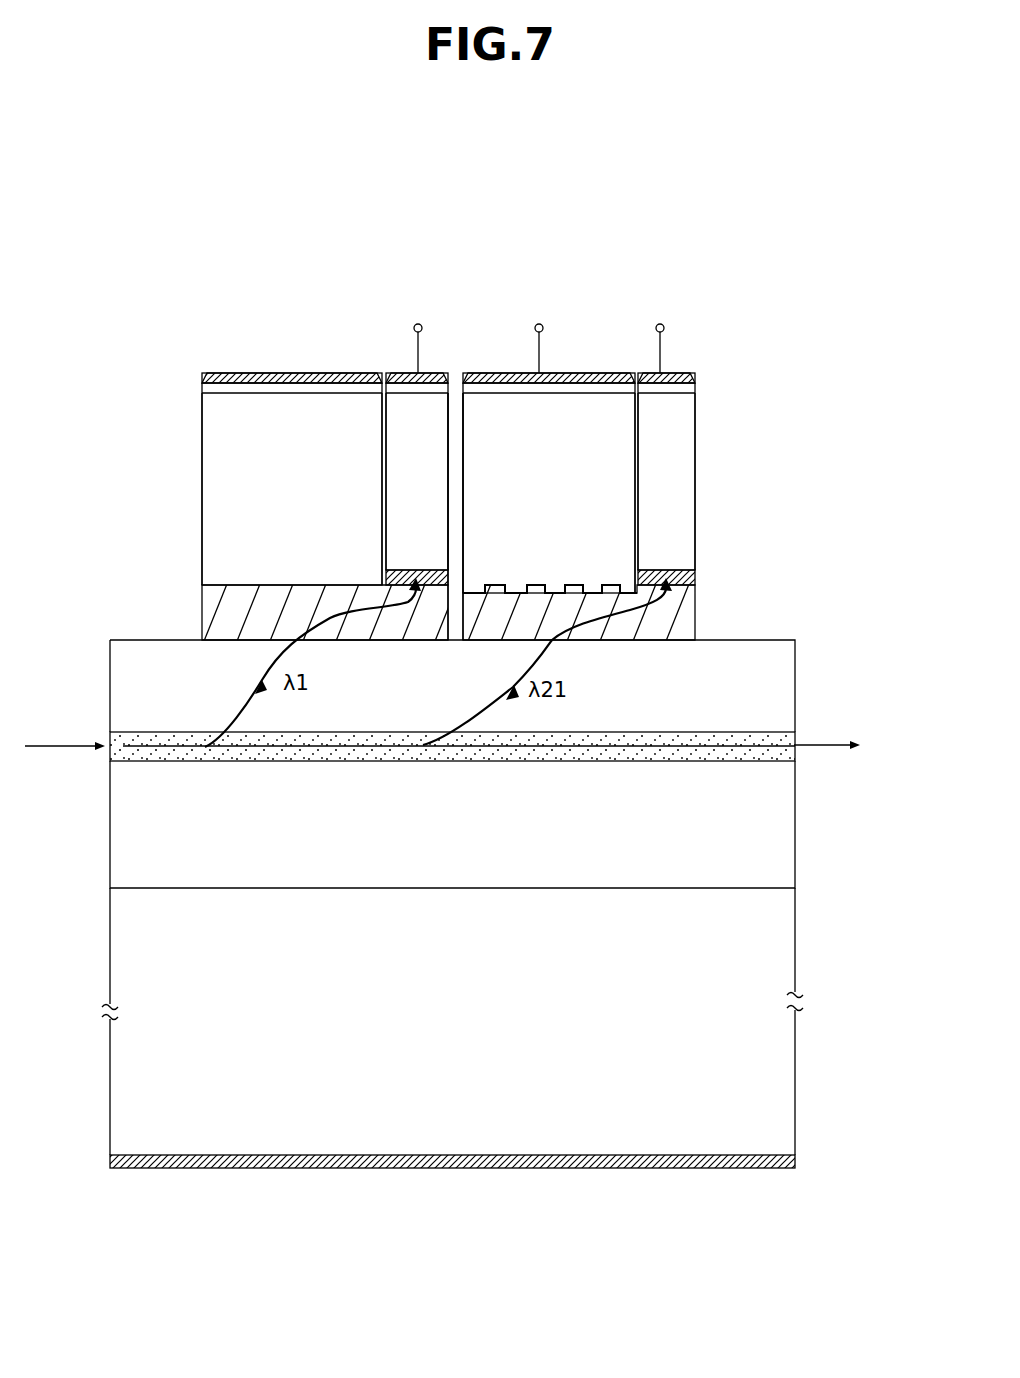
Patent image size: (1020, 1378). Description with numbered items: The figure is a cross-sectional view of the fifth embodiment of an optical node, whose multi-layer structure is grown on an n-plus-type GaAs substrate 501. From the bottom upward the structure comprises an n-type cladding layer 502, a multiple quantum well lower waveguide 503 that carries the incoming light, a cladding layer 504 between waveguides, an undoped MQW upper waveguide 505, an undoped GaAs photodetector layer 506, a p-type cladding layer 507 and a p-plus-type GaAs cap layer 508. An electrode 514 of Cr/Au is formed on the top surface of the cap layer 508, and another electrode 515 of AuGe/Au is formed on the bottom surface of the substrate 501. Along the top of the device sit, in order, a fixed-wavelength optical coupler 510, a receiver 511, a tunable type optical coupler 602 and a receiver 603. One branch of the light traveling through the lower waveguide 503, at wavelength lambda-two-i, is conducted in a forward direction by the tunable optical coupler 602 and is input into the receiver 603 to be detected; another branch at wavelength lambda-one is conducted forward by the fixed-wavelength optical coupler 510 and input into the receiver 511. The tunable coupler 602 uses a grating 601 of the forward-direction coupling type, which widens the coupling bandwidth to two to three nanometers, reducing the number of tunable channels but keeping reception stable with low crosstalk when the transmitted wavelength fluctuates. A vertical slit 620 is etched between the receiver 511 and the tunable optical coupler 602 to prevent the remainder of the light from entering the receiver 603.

The substrate 501 is at (780, 943).
The cladding layer 502 is at (785, 820).
The lower waveguide 503 is at (785, 737).
The cladding layer between waveguides 504 is at (772, 680).
The upper waveguide 505 is at (690, 609).
The photodetector layer 506 is at (695, 573).
The cladding layer 507 is at (690, 422).
The cap layer 508 is at (700, 388).
The fixed-wavelength optical coupler 510 is at (362, 298).
The receiver 511 is at (448, 298).
The electrode 514 is at (688, 378).
The electrode 515 is at (797, 1155).
The grating 601 is at (578, 586).
The tunable type optical coupler 602 is at (625, 298).
The receiver 603 is at (698, 298).
The vertical slit 620 is at (455, 397).